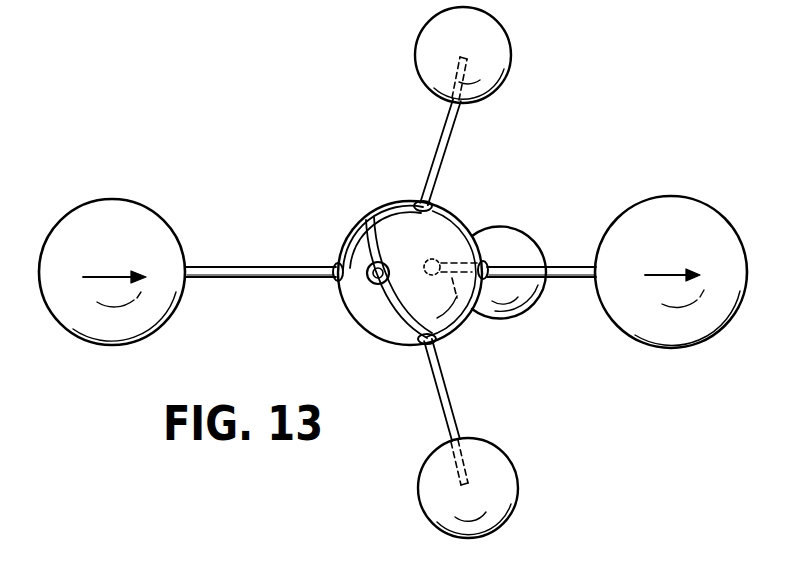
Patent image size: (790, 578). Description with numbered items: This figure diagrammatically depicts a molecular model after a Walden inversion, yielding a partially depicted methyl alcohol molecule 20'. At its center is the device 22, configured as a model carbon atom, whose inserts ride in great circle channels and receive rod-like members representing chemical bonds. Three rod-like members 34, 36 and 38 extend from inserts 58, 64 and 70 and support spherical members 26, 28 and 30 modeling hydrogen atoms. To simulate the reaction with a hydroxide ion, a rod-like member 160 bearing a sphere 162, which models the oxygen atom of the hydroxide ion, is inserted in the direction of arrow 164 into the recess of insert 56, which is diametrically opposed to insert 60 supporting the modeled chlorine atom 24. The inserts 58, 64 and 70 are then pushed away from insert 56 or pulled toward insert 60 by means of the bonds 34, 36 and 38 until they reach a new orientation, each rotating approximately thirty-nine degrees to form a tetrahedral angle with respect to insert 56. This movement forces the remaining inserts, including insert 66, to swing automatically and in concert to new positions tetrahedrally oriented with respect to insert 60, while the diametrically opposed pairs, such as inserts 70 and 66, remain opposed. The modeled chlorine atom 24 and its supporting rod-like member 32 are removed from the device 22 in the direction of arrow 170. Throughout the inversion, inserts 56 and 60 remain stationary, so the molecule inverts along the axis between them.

The methyl alcohol molecule 20' is at (322, 156).
The device 22 is at (447, 206).
The spherical member 24 is at (643, 325).
The spherical member 26 is at (503, 61).
The spherical member 28 is at (492, 465).
The spherical member 30 is at (521, 246).
The rod-like member 32 is at (585, 276).
The rod-like member 34 is at (436, 161).
The rod-like member 36 is at (445, 378).
The rod-like member 38 is at (463, 320).
The insert 56 is at (334, 266).
The insert 58 is at (416, 204).
The insert 60 is at (488, 262).
The insert 64 is at (420, 345).
The insert 66 is at (375, 284).
The insert 70 is at (442, 266).
The rod-like member 160 is at (236, 263).
The sphere 162 is at (124, 210).
The arrow 164 is at (112, 266).
The arrow 170 is at (672, 264).